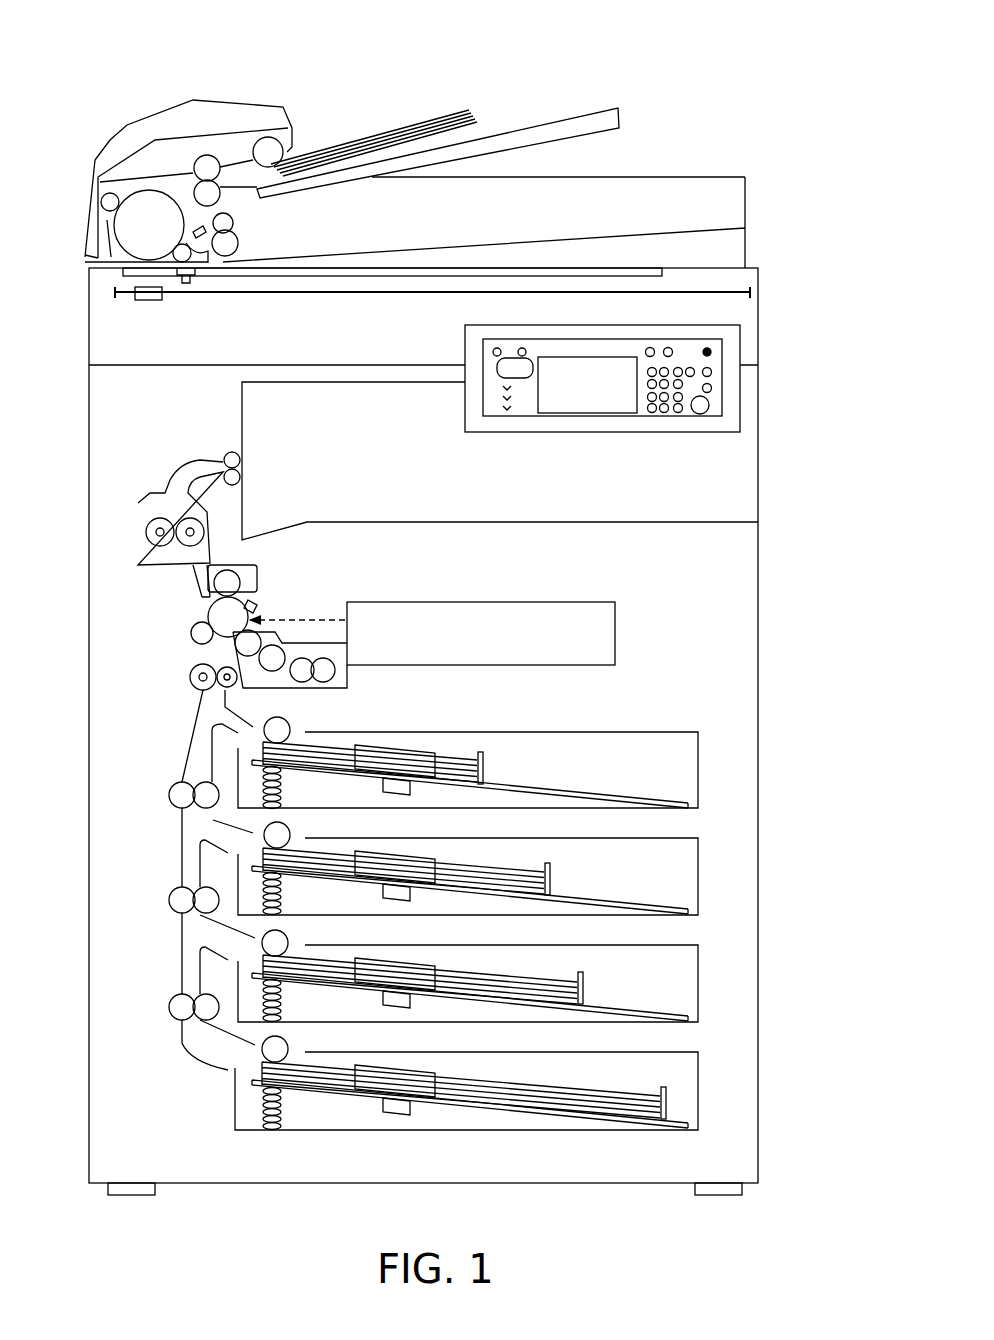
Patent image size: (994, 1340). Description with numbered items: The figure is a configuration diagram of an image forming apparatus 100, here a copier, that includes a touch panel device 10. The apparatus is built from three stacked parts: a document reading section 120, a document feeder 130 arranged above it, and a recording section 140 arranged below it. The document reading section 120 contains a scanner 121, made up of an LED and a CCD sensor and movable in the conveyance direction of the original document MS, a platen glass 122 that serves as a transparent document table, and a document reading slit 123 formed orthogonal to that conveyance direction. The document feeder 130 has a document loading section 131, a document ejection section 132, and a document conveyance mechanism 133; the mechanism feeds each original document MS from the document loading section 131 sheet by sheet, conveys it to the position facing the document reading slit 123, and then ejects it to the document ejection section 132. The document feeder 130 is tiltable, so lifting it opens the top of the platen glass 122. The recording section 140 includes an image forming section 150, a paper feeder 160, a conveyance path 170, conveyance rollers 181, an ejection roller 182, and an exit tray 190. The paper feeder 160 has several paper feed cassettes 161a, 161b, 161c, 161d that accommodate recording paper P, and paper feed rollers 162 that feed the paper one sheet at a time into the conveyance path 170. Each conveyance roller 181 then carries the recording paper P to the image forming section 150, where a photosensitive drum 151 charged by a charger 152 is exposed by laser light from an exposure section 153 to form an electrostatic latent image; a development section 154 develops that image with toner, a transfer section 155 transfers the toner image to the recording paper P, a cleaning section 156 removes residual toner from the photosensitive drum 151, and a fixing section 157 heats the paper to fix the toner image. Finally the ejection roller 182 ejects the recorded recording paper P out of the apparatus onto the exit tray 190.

The image forming apparatus 100 is at (92, 82).
The touch panel device 10 is at (743, 357).
The document reading section 120 is at (766, 306).
The scanner 121 is at (152, 302).
The platen glass 122 is at (588, 269).
The document reading slit 123 is at (160, 274).
The document feeder 130 is at (318, 108).
The document loading section 131 is at (588, 112).
The document ejection section 132 is at (503, 242).
The document conveyance mechanism 133 is at (219, 100).
The original document MS is at (434, 130).
The recording section 140 is at (765, 592).
The image forming section 150 is at (343, 583).
The photosensitive drum 151 is at (212, 612).
The charger 152 is at (260, 603).
The exposure section 153 is at (575, 645).
The development section 154 is at (338, 678).
The transfer section 155 is at (190, 635).
The cleaning section 156 is at (257, 565).
The fixing section 157 is at (210, 525).
The paper feeder 160 is at (732, 750).
The paper feed cassette 161a is at (698, 775).
The paper feed cassette 161b is at (698, 882).
The paper feed cassette 161c is at (698, 988).
The paper feed cassette 161d is at (698, 1094).
The paper feed roller 162 is at (284, 728).
The recording paper P is at (447, 757).
The conveyance path 170 is at (182, 719).
The conveyance roller 181 is at (190, 677).
The ejection roller 182 is at (238, 456).
The exit tray 190 is at (466, 520).